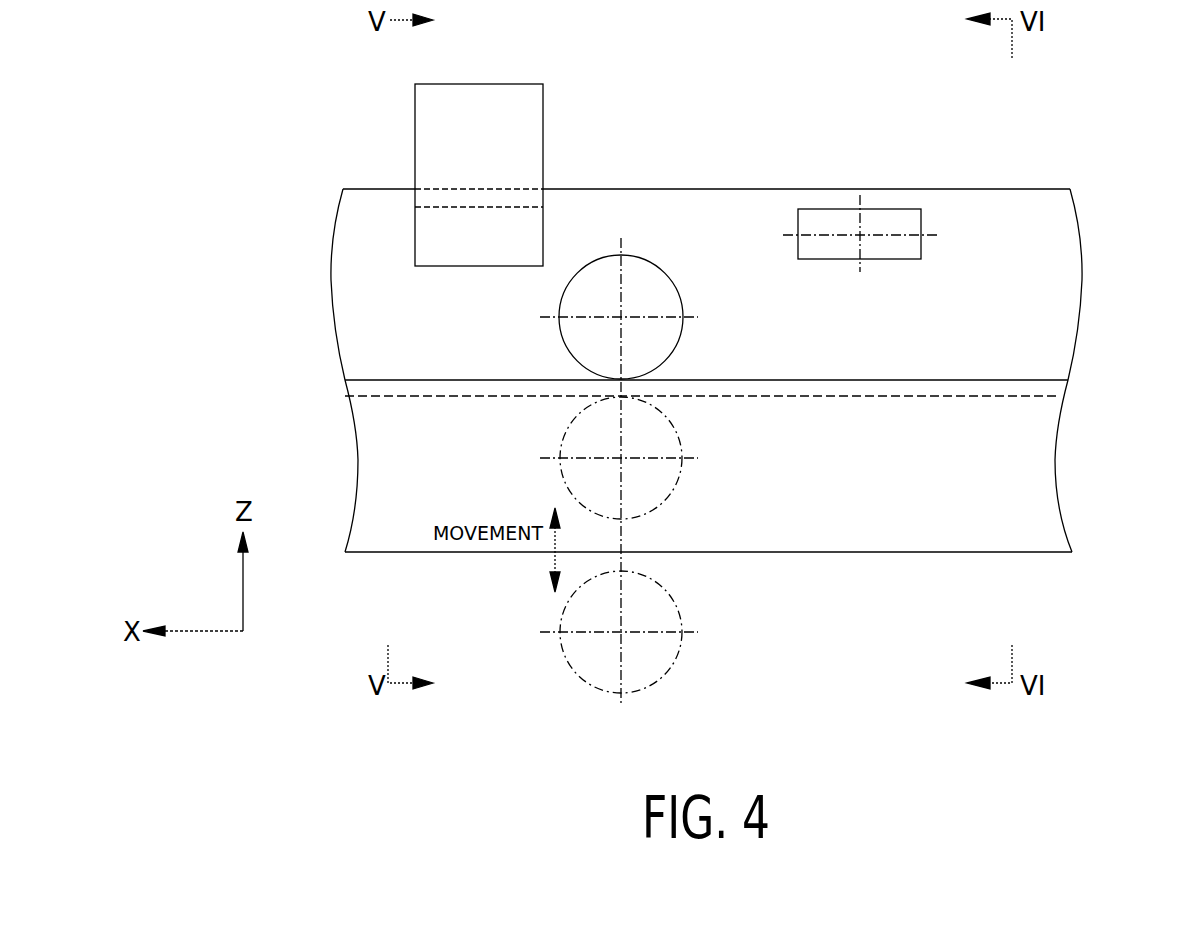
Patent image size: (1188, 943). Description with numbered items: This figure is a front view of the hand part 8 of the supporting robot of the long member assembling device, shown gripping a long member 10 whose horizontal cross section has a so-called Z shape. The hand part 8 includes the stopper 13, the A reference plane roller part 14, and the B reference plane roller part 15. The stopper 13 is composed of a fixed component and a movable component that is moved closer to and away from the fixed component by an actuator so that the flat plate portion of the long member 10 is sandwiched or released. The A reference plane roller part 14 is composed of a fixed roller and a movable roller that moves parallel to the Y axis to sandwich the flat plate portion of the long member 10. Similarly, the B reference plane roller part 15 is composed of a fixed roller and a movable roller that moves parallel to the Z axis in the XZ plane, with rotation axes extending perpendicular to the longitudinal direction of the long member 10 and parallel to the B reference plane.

The hand part 8 is at (768, 95).
The long member 10 is at (1050, 261).
The stopper 13 is at (543, 114).
The A reference plane roller part 14 is at (887, 209).
The B reference plane roller part 15 is at (682, 300).